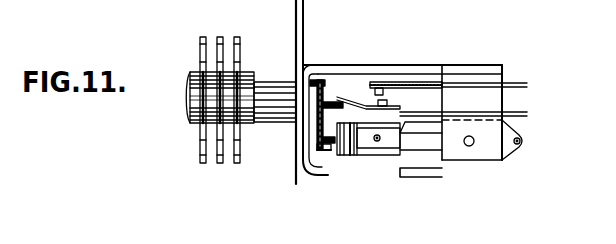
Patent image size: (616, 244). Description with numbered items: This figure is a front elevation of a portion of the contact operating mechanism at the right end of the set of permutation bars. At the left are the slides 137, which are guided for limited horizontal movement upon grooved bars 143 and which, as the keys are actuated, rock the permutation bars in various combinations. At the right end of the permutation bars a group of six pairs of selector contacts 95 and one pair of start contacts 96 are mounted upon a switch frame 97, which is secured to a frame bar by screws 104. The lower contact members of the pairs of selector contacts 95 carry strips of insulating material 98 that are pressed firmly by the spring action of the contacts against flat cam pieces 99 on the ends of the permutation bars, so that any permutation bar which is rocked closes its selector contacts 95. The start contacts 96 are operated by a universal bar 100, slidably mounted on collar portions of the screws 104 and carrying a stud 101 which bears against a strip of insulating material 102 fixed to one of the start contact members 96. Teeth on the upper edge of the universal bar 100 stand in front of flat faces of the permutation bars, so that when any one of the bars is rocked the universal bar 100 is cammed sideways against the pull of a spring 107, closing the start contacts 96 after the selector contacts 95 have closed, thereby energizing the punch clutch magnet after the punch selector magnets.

The selector contacts 95 is at (391, 86).
The start contacts 96 is at (401, 171).
The switch frame 97 is at (483, 99).
The strips of insulating material 98 is at (356, 97).
The flat cam pieces 99 is at (317, 124).
The universal bar 100 is at (318, 144).
The stud 101 is at (330, 152).
The strip of insulating material 102 is at (351, 157).
The screws 104 is at (318, 88).
The spring 107 is at (431, 92).
The slides 137 is at (207, 38).
The grooved bars 143 is at (200, 100).